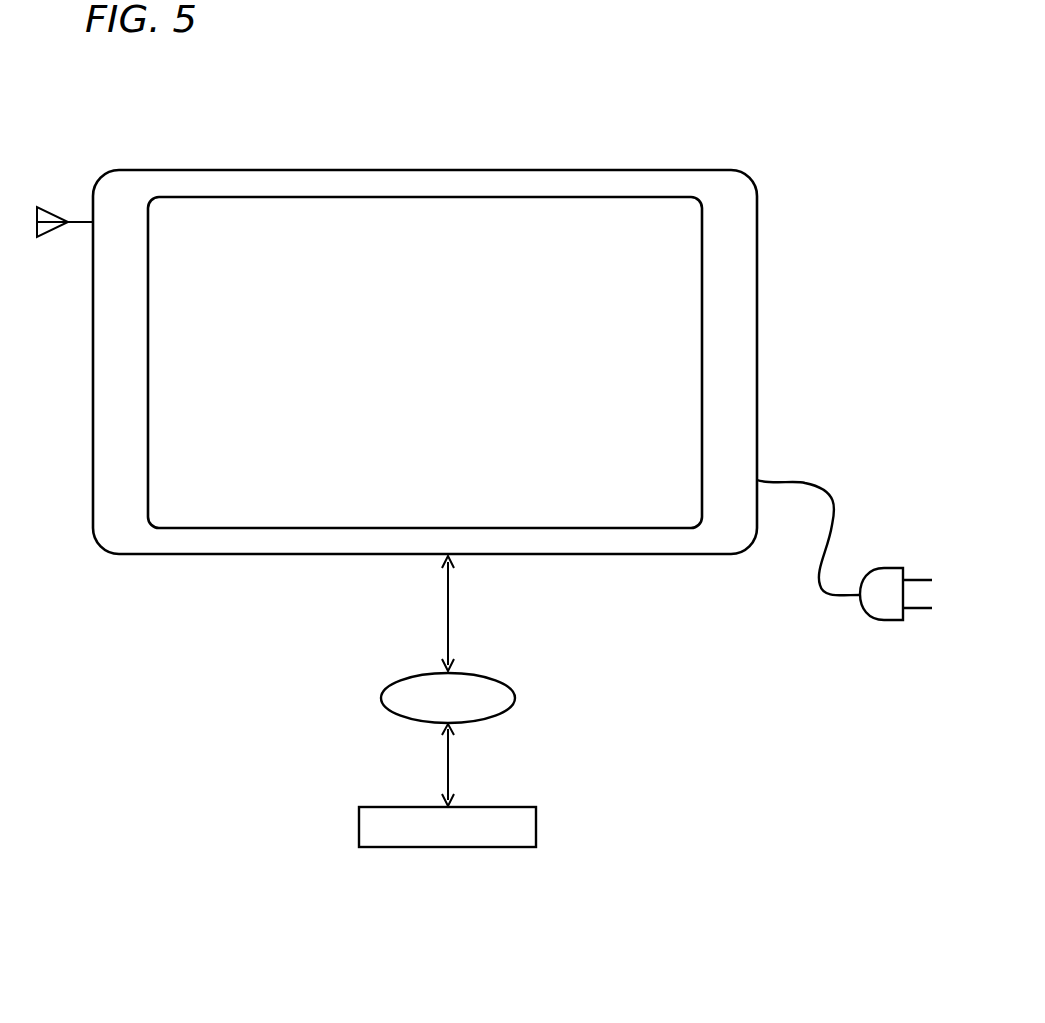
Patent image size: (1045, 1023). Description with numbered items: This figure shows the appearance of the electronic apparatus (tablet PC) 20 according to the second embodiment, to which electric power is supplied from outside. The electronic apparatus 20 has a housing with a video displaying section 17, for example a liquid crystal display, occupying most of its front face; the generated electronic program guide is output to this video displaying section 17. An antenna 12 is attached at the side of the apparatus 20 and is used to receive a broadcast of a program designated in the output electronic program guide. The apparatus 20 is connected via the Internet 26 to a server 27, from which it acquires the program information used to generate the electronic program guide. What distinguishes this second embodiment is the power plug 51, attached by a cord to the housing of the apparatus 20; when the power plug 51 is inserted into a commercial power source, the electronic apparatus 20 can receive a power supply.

The antenna 12 is at (79, 219).
The video displaying section 17 is at (667, 228).
The electronic apparatus (tablet PC) 20 is at (296, 169).
The Internet 26 is at (515, 698).
The server 27 is at (536, 833).
The power plug 51 is at (886, 622).